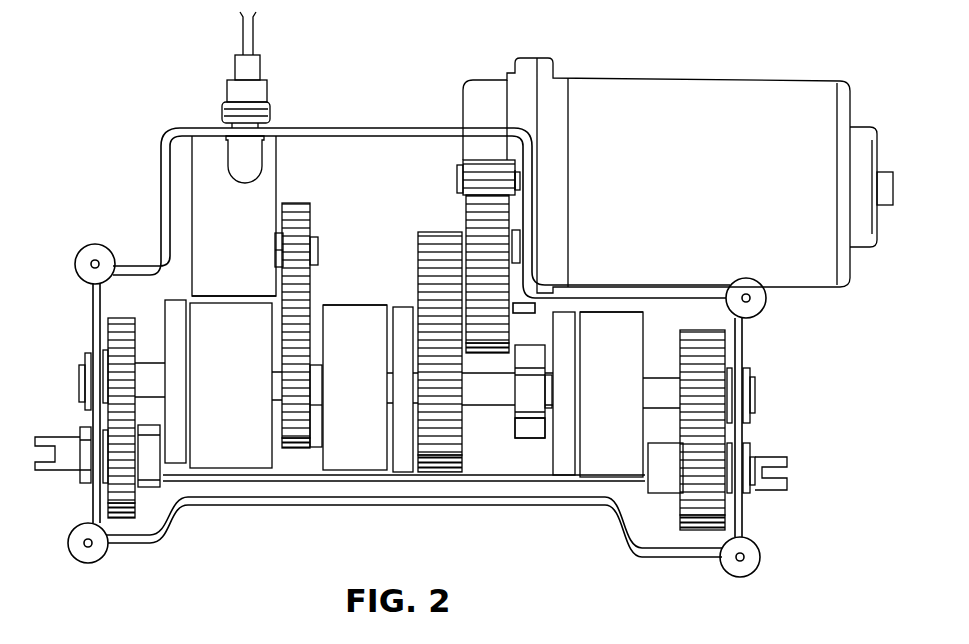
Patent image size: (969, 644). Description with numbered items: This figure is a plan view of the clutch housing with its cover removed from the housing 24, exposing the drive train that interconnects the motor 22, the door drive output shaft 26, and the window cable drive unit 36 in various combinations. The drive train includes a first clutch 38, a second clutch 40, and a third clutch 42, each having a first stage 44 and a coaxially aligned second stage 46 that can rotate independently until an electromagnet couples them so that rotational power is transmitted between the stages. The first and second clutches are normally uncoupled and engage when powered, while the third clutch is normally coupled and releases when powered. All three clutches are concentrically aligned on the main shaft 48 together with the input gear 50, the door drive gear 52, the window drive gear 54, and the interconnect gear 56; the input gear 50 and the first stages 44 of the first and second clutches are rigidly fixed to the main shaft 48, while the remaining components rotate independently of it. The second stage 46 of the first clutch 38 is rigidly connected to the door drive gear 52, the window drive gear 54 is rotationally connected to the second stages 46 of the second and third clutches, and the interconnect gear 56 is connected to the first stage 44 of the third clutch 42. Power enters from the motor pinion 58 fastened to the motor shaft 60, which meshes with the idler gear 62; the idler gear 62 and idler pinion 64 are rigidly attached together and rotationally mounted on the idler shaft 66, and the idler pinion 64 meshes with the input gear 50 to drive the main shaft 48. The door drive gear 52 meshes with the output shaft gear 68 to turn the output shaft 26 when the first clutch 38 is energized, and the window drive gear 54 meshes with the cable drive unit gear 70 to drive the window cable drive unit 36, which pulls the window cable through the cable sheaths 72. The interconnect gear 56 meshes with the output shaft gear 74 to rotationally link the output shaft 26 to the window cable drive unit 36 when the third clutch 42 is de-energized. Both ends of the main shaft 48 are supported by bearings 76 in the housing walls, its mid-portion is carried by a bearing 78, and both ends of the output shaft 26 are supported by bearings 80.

The motor 22 is at (699, 199).
The housing 24 is at (656, 552).
The door drive output shaft 26 is at (62, 470).
The window cable drive unit 36 is at (237, 205).
The first clutch 38 is at (590, 306).
The second clutch 40 is at (378, 301).
The third clutch 42 is at (208, 300).
The first stage 44 is at (174, 464).
The second stage 46 is at (231, 470).
The main shaft 48 is at (492, 395).
The input gear 50 is at (437, 474).
The door drive gear 52 is at (717, 343).
The window drive gear 54 is at (296, 450).
The interconnect gear 56 is at (122, 318).
The motor pinion 58 is at (463, 163).
The motor shaft 60 is at (518, 180).
The idler gear 62 is at (470, 222).
The idler pinion 64 is at (420, 247).
The idler shaft 66 is at (512, 270).
The output shaft gear 68 is at (698, 530).
The cable drive unit gear 70 is at (297, 203).
The cable sheaths 72 is at (241, 28).
The output shaft gear 74 is at (118, 518).
The bearings 76 is at (86, 353).
The bearing 78 is at (532, 440).
The bearings 80 is at (82, 430).